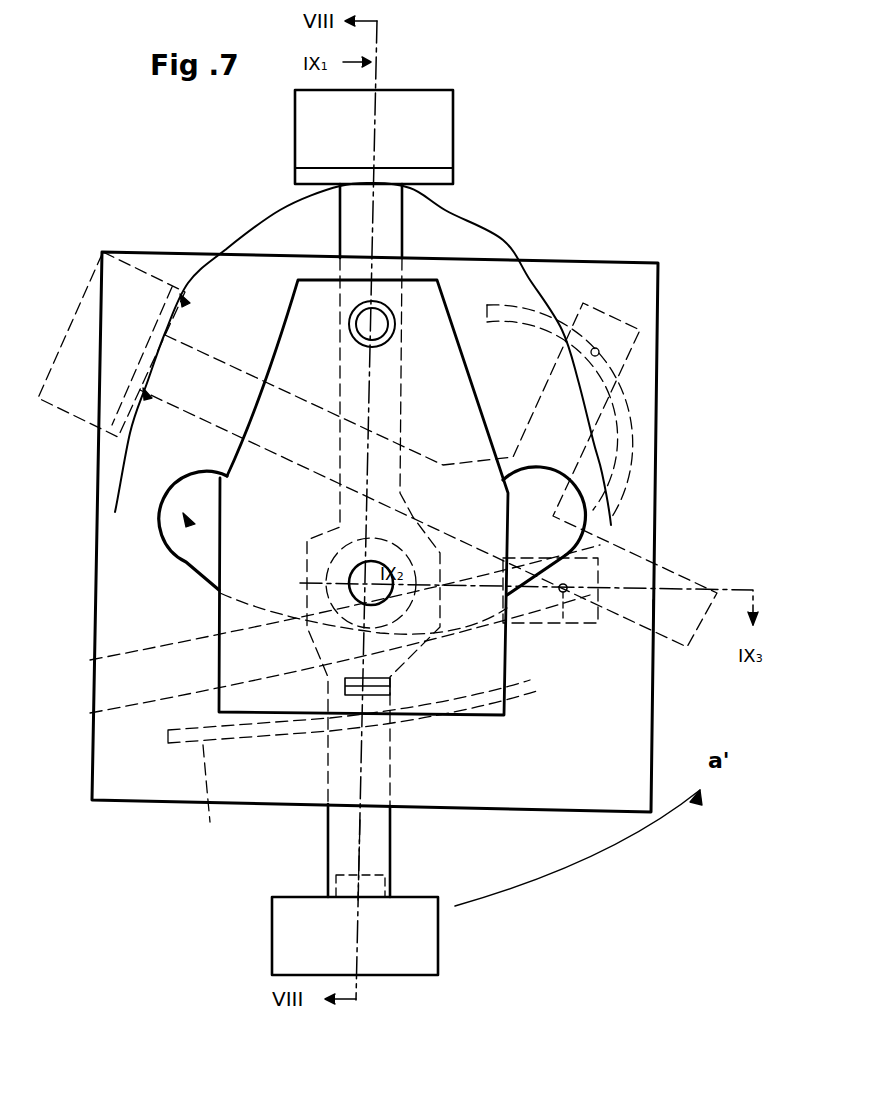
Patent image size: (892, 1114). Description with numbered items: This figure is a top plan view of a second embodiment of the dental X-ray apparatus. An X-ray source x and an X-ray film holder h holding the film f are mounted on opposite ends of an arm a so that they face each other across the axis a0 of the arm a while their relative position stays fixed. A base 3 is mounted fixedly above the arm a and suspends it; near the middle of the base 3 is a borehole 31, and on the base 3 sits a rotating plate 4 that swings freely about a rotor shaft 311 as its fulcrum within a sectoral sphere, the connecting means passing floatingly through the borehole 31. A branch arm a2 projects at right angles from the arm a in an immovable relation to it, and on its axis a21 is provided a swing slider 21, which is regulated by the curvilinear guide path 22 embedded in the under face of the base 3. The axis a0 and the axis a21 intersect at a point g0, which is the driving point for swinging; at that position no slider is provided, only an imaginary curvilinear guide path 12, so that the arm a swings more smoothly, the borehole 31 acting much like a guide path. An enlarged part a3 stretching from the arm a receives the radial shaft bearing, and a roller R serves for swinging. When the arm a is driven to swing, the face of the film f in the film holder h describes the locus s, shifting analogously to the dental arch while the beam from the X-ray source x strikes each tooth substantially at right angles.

The base 3 is at (630, 272).
The borehole 31 is at (190, 522).
The rotor shaft 311 is at (392, 313).
The rotating plate 4 is at (680, 546).
The swing slider 21 is at (553, 600).
The curvilinear guide path 22 is at (354, 765).
The imaginary curvilinear guide path 12 is at (318, 610).
The X-ray film holder h is at (447, 181).
The film f is at (358, 188).
The locus s is at (243, 231).
The X-ray source x is at (436, 940).
The roller for swinging R is at (372, 692).
The arm a is at (388, 838).
The axis of the arm a0 is at (358, 845).
The branch arm a2 is at (572, 600).
The axis of the branch arm a21 is at (653, 640).
The enlarged part a3 is at (314, 661).
The point of intersection g0 is at (360, 567).